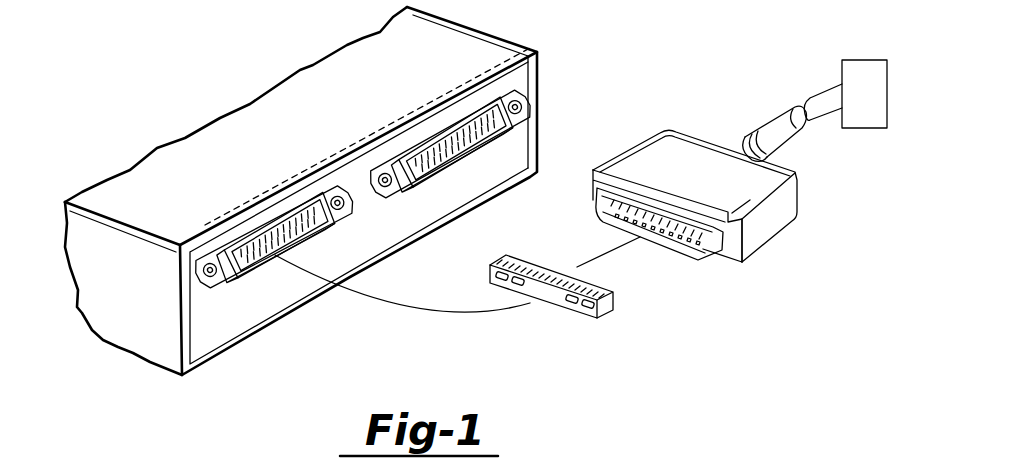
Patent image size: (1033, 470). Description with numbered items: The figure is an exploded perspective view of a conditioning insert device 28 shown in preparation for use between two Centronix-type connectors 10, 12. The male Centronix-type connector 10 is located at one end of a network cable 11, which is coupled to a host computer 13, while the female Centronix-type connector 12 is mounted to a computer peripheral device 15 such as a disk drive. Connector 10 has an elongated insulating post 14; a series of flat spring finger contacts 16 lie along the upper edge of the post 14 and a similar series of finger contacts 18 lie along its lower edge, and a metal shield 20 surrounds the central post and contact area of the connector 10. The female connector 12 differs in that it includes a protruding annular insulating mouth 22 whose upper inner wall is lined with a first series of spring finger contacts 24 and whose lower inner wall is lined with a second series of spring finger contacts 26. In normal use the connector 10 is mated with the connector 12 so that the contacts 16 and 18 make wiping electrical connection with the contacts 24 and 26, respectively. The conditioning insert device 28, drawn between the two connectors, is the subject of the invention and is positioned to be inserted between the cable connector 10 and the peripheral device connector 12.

The male Centronix-type connector 10 is at (700, 128).
The network cable 11 is at (787, 130).
The female Centronix-type connector 12 is at (215, 298).
The host computer 13 is at (860, 80).
The elongated insulating post 14 is at (704, 252).
The computer peripheral device 15 is at (132, 312).
The flat spring finger contacts 16 is at (666, 226).
The finger contacts 18 is at (664, 258).
The metal shield 20 is at (632, 195).
The protruding annular insulating mouth 22 is at (303, 222).
The first series of spring finger contacts 24 is at (278, 206).
The second series of spring finger contacts 26 is at (278, 238).
The conditioning insert device 28 is at (550, 305).